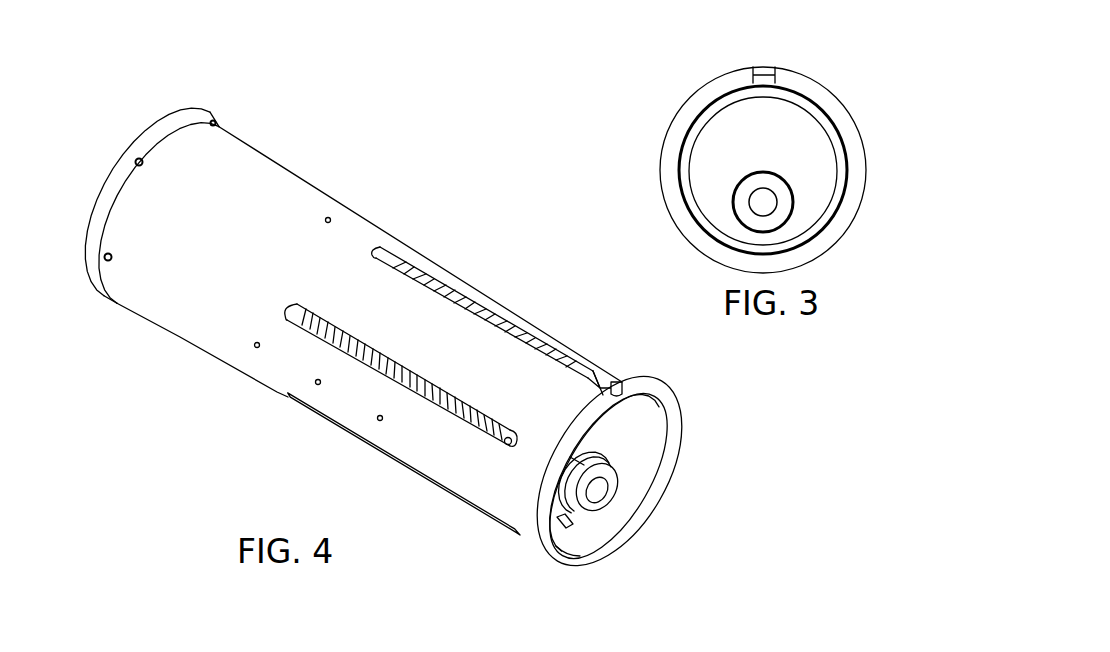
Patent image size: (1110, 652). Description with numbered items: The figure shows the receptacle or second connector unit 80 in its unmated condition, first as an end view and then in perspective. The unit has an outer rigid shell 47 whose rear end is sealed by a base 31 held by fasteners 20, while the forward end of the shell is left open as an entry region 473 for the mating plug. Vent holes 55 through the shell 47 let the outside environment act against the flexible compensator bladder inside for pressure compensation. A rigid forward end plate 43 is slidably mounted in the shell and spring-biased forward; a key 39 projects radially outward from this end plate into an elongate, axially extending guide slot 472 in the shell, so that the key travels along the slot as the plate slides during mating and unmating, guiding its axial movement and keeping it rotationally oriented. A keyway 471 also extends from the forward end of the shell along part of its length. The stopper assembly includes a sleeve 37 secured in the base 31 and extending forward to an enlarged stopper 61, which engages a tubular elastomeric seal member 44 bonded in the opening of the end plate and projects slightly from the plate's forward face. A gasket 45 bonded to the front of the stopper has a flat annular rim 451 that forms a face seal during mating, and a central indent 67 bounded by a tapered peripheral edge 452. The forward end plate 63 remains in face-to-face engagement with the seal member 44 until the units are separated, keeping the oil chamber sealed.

In FIG. 4, the fasteners 20 is at (108, 258).
In FIG. 4, the base 31 is at (175, 118).
In FIG. 4, the outer rigid shell 47 is at (267, 173).
In FIG. 3, the outer rigid shell 47 is at (797, 83).
In FIG. 4, the vent holes 55 is at (332, 217).
In FIG. 4, the keyway 471 is at (482, 303).
In FIG. 3, the keyway 471 is at (765, 70).
In FIG. 4, the guide slot 472 is at (477, 435).
In FIG. 4, the key 39 is at (503, 447).
In FIG. 4, the forward end plate 63 is at (607, 418).
In FIG. 4, the open forward end 473 is at (645, 425).
In FIG. 4, the tapered peripheral edge 452 is at (610, 463).
In FIG. 4, the annular rim 451 is at (590, 512).
In FIG. 4, the central indent 67 is at (597, 493).
In FIG. 4, the stopper 61 is at (567, 527).
In FIG. 4, the seal member 44 is at (563, 500).
In FIG. 4, the second connector unit 80 is at (203, 415).
In FIG. 3, the end plate 43 is at (795, 128).
In FIG. 3, the sleeve 37 is at (738, 218).
In FIG. 3, the gasket 45 is at (782, 210).